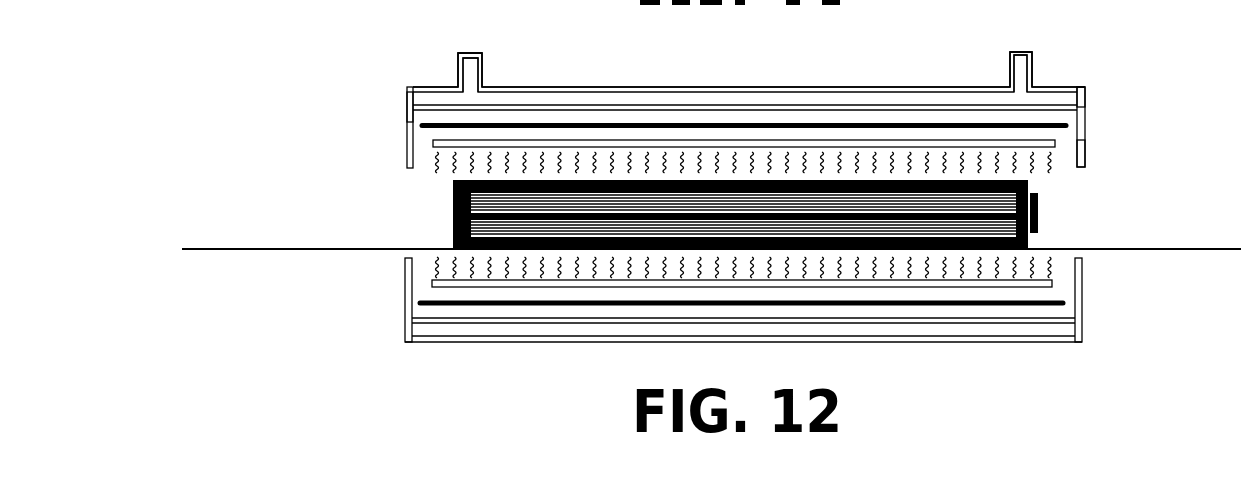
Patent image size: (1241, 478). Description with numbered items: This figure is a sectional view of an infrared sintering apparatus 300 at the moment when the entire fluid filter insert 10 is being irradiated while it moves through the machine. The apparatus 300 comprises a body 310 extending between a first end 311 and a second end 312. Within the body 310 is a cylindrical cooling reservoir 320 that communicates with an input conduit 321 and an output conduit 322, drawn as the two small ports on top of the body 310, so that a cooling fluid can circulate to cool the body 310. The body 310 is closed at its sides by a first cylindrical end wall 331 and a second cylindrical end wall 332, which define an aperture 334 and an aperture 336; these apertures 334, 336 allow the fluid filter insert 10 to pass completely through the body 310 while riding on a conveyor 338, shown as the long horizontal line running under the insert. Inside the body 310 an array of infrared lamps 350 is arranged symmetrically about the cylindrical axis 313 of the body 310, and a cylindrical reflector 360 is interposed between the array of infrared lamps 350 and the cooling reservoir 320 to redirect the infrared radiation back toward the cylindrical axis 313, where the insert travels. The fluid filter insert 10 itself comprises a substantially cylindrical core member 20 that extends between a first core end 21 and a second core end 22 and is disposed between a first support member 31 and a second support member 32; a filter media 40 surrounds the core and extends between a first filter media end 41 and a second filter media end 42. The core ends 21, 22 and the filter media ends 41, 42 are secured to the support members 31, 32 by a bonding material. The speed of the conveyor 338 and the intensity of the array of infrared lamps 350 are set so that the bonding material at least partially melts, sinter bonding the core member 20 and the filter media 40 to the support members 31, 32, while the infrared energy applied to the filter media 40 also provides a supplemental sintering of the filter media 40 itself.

The apparatus 300 is at (1058, 41).
The body 310 is at (712, 88).
The first end 311 is at (1062, 87).
The second end 312 is at (410, 88).
The cylindrical axis 313 is at (625, 213).
The cylindrical cooling reservoir 320 is at (865, 98).
The input conduit 321 is at (1020, 52).
The output conduit 322 is at (473, 56).
The first cylindrical end wall 331 is at (1085, 113).
The second cylindrical end wall 332 is at (410, 110).
The aperture 334 is at (1070, 177).
The aperture 336 is at (418, 180).
The conveyor 338 is at (315, 250).
The array of infrared lamps 350 is at (930, 143).
The cylindrical reflector 360 is at (788, 122).
The fluid filter insert 10 is at (570, 248).
The core member 20 is at (617, 248).
The first core end 21 is at (475, 248).
The second core end 22 is at (1020, 248).
The first support member 31 is at (455, 248).
The second support member 32 is at (1029, 248).
The filter media 40 is at (903, 248).
The first filter media end 41 is at (483, 248).
The second filter media end 42 is at (983, 248).